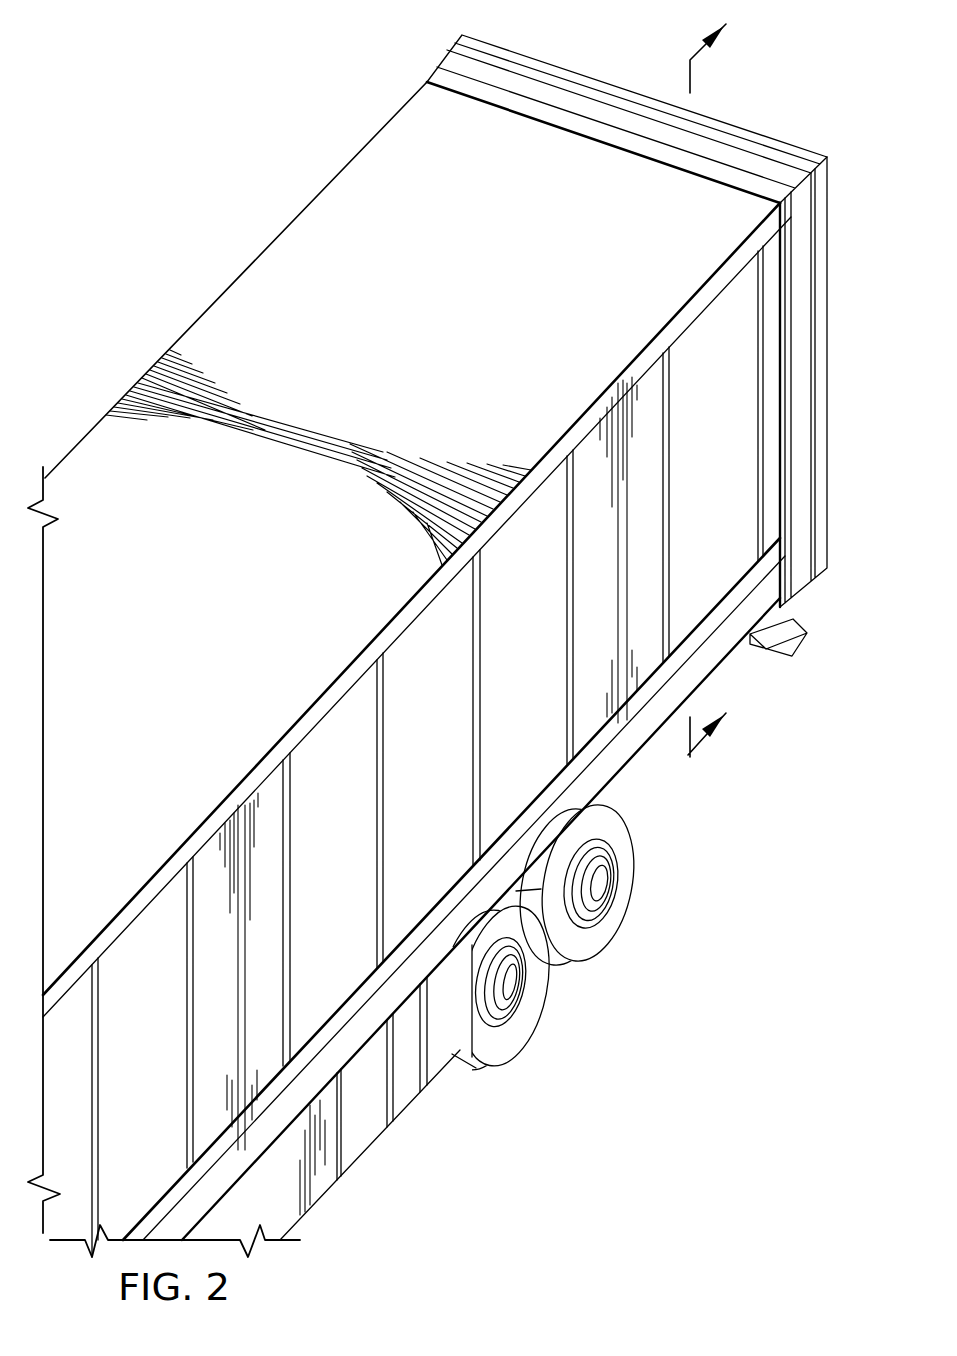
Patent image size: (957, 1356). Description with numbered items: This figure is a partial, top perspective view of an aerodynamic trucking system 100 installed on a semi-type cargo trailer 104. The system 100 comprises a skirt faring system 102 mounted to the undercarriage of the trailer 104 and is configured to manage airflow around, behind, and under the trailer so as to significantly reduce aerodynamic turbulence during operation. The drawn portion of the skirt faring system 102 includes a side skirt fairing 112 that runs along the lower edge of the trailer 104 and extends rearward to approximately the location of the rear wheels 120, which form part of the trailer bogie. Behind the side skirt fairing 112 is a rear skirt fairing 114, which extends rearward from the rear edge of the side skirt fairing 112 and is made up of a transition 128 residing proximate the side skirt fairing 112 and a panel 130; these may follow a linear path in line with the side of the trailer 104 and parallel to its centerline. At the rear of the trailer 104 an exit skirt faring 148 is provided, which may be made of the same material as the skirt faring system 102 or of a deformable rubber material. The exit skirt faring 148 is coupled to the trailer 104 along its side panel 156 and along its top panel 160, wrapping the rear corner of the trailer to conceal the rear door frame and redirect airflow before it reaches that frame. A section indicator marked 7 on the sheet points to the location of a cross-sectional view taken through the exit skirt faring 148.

The section line for FIG. 7 is at (717, 381).
The aerodynamic trucking system 100 is at (554, 1198).
The skirt faring system 102 is at (436, 1196).
The cargo trailer 104 is at (224, 284).
The side skirt fairing 112 is at (336, 1218).
The rear skirt fairing 114 is at (466, 1096).
The wheels 120 is at (594, 960).
The transition 128 is at (400, 1112).
The panel 130 is at (455, 1055).
The exit skirt faring 148 is at (784, 151).
The side panel 156 is at (733, 352).
The top panel 160 is at (332, 203).